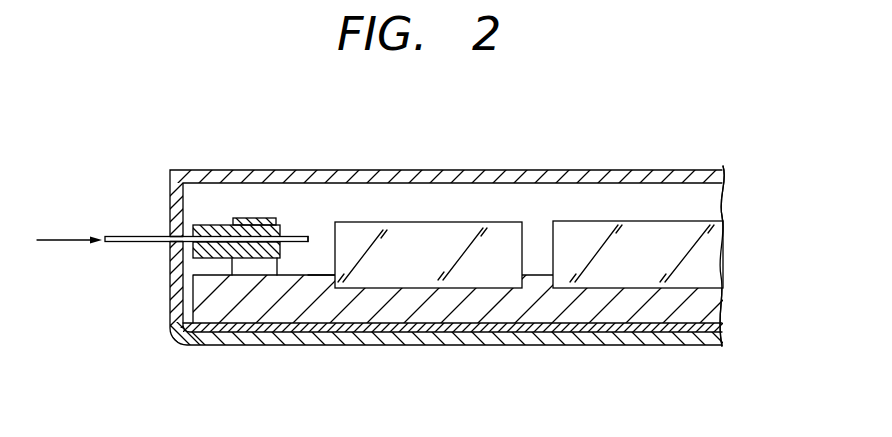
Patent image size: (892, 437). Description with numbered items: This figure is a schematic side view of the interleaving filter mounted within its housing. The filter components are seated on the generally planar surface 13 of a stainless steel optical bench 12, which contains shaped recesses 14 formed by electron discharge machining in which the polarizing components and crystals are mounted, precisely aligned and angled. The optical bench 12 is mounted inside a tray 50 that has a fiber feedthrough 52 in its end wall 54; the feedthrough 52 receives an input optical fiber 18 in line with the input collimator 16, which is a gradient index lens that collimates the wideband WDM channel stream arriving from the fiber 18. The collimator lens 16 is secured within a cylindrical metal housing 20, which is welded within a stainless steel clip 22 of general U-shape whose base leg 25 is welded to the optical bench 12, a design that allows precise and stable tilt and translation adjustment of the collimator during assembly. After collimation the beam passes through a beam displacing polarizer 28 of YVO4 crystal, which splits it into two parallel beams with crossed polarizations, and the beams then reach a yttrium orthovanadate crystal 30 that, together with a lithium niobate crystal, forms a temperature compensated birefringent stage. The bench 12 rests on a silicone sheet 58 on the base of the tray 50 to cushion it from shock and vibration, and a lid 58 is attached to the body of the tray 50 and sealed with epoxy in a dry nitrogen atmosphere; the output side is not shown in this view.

The optical bench 12 is at (257, 316).
The planar surface 13 is at (322, 274).
The shaped recesses 14 is at (400, 288).
The collimator 16 is at (299, 229).
The input optical fiber 18 is at (112, 243).
The cylindrical metal housing 20 is at (281, 258).
The clip 22 is at (257, 216).
The base leg 25 is at (242, 265).
The beam displacing polarizer 28 is at (503, 222).
The YVO4 crystal 30 is at (588, 221).
The tray 50 is at (610, 343).
The fiber feedthrough 52 is at (158, 254).
The end wall 54 is at (170, 221).
The silicone sheet 58 is at (474, 169).